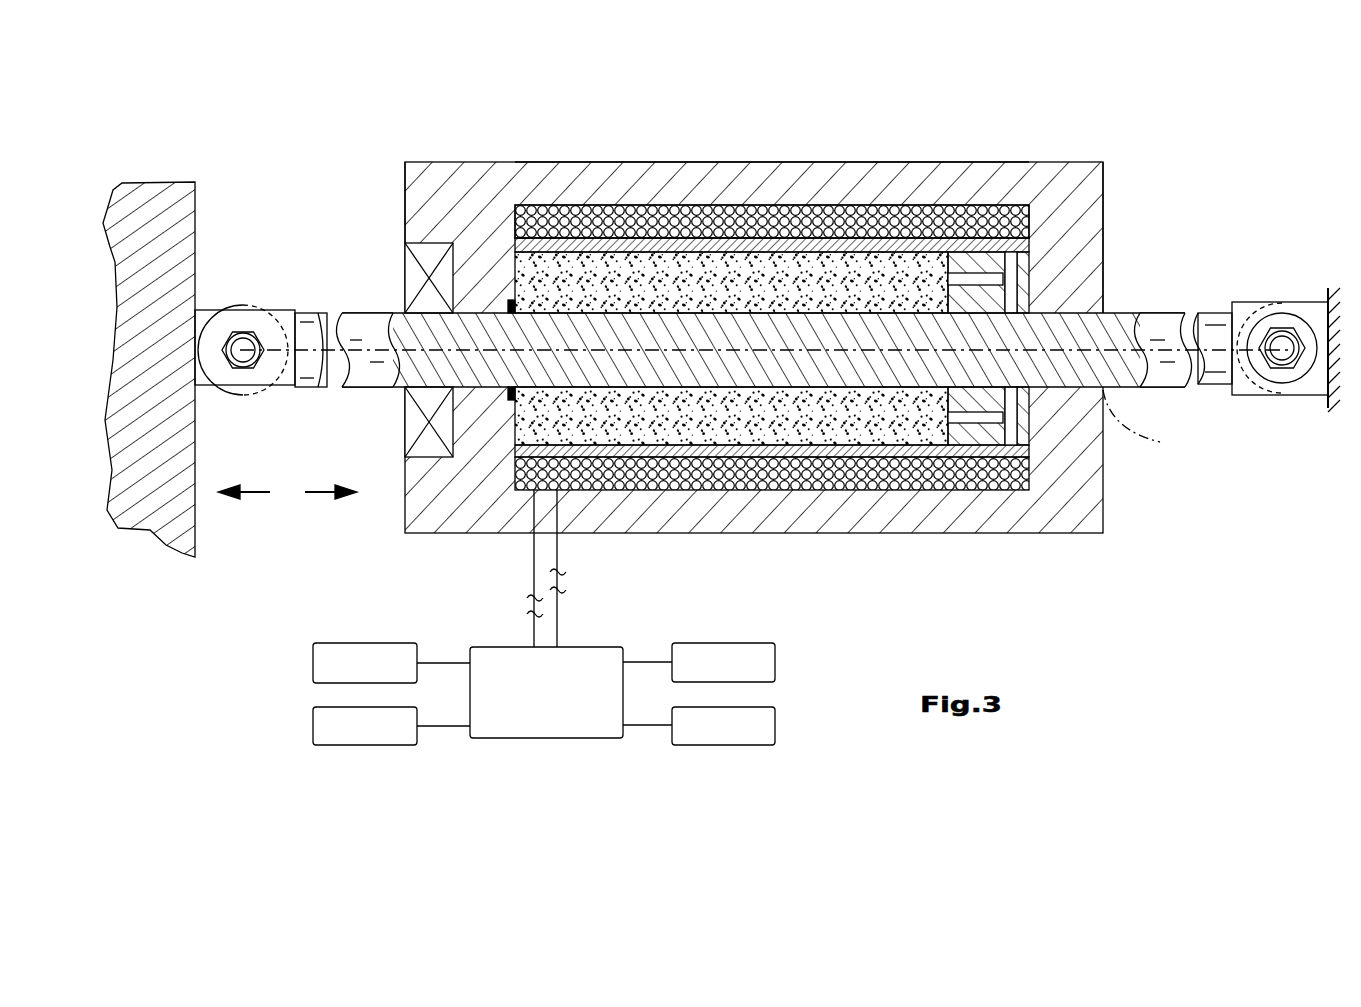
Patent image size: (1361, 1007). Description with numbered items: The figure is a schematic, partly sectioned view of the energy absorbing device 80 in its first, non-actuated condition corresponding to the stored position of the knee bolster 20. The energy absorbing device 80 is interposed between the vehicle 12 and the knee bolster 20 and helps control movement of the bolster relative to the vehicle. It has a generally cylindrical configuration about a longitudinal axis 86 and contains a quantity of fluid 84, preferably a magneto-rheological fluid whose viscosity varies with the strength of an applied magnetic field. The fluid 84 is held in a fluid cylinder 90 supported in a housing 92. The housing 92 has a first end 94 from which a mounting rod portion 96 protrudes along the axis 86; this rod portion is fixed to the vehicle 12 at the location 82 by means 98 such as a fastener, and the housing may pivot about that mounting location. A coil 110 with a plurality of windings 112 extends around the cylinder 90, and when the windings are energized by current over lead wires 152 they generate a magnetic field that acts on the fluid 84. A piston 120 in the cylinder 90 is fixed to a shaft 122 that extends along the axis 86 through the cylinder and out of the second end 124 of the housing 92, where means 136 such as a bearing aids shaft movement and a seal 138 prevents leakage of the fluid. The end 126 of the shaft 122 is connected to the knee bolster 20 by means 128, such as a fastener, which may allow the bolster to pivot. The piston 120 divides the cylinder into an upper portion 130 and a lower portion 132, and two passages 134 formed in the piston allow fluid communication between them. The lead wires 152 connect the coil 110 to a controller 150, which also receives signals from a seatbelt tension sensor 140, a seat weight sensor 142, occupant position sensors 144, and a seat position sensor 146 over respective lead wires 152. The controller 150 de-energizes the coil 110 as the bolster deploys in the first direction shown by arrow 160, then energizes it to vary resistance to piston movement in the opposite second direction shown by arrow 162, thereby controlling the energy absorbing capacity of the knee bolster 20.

The vehicle 12 is at (1320, 302).
The knee bolster 20 is at (195, 212).
The energy absorbing device 80 is at (466, 96).
The location 82 is at (1272, 298).
The fluid 84 is at (570, 280).
The longitudinal axis 86 is at (1147, 422).
The fluid cylinder 90 is at (748, 247).
The housing 92 is at (706, 190).
The first end 94 is at (1083, 190).
The mounting rod portion 96 is at (1214, 326).
The means 98 is at (1282, 362).
The coil 110 is at (802, 200).
The windings 112 is at (838, 222).
The piston 120 is at (997, 425).
The shaft 122 is at (370, 326).
The second end 124 is at (416, 190).
The end 126 is at (240, 320).
The means 128 is at (246, 386).
The upper cylinder portion 130 is at (895, 418).
The lower cylinder portion 132 is at (1010, 279).
The passages 134 is at (1013, 300).
The means 136 is at (410, 278).
The seal 138 is at (510, 392).
The seatbelt tension sensor 140 is at (313, 662).
The seat weight sensor 142 is at (313, 722).
The occupant position sensors 144 is at (775, 661).
The seat position sensor 146 is at (775, 725).
The controller 150 is at (538, 744).
The lead wires 152 is at (536, 548).
The arrow 160 is at (271, 494).
The arrow 162 is at (304, 494).